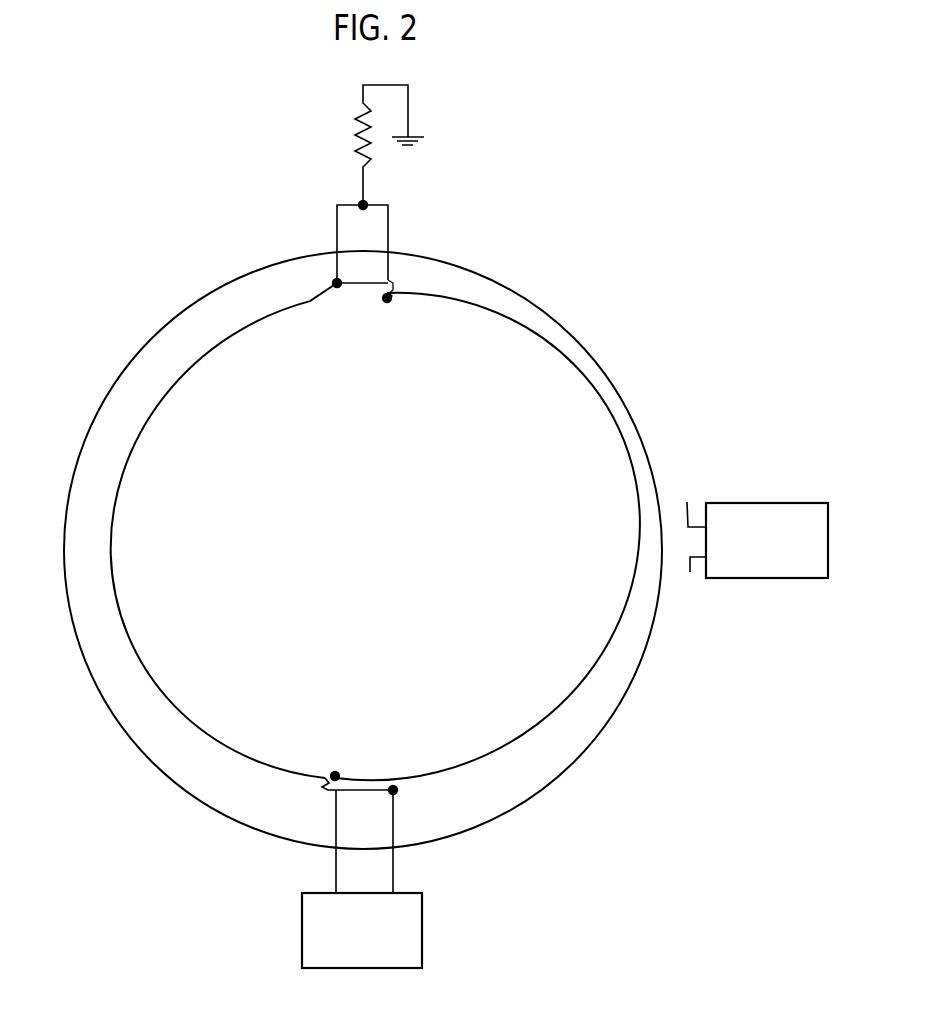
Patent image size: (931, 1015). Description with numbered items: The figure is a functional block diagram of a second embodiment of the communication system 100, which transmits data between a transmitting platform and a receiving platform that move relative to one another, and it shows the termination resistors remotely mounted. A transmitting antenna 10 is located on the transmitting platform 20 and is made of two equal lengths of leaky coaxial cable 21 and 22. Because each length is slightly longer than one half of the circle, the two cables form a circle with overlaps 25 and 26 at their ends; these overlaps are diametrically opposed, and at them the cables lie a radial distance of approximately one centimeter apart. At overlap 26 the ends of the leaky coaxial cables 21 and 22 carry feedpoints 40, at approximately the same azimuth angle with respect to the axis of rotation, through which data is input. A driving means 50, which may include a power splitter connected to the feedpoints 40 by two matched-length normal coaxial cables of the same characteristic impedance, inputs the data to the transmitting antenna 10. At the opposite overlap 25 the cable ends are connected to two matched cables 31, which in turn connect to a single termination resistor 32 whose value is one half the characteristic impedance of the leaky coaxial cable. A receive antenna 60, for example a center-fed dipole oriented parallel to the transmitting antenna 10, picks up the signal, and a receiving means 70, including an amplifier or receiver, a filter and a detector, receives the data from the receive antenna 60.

The communication system 100 is at (173, 270).
The transmitting antenna 10 is at (454, 521).
The transmitting platform 20 is at (112, 383).
The leaky coaxial cable 21 is at (112, 568).
The leaky coaxial cable 22 is at (560, 682).
The overlap 25 is at (363, 292).
The overlap 26 is at (362, 782).
The matched cables 31 is at (337, 227).
The termination resistor 32 is at (352, 136).
The feedpoints 40 is at (334, 772).
The driving means 50 is at (423, 923).
The receive antenna 60 is at (691, 566).
The receiving means 70 is at (740, 503).